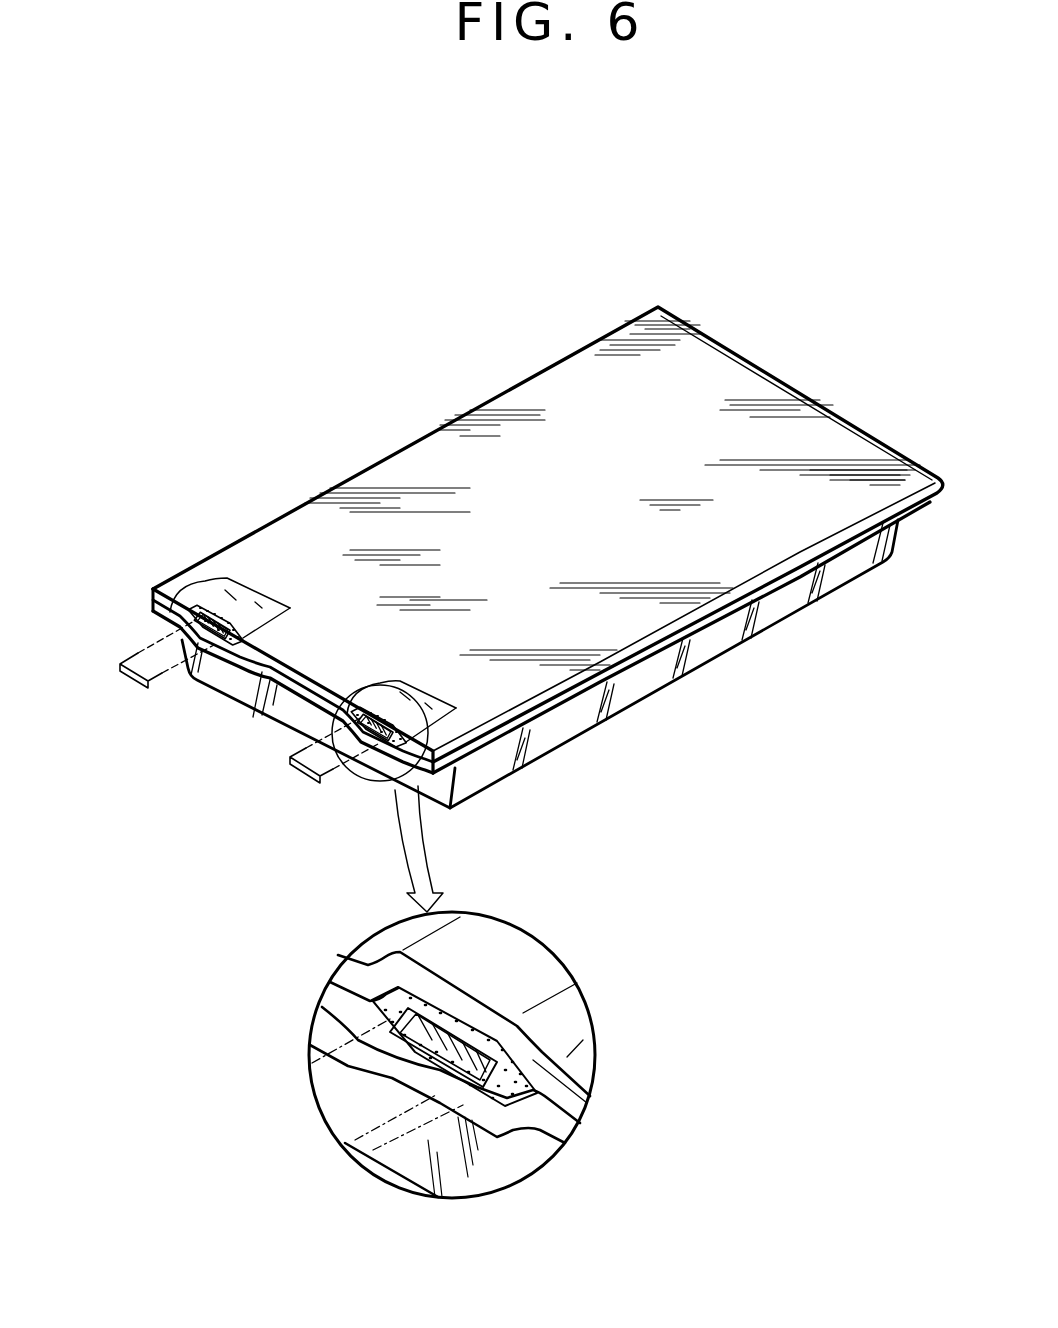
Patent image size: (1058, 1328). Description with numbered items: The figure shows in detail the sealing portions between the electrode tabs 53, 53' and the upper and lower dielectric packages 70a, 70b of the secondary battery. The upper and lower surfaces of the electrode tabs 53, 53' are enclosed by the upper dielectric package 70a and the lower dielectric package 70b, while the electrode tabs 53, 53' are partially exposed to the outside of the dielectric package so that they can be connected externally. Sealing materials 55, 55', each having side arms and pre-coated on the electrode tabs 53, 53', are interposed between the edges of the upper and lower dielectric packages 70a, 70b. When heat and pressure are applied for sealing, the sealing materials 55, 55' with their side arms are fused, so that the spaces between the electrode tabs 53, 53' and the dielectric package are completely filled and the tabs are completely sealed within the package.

The sealing material 55 is at (166, 581).
The electrode tab 53 is at (144, 630).
The upper dielectric package 70a is at (267, 662).
The lower dielectric package 70b is at (262, 703).
The electrode tab 53' is at (372, 932).
The sealing material 55' is at (515, 900).